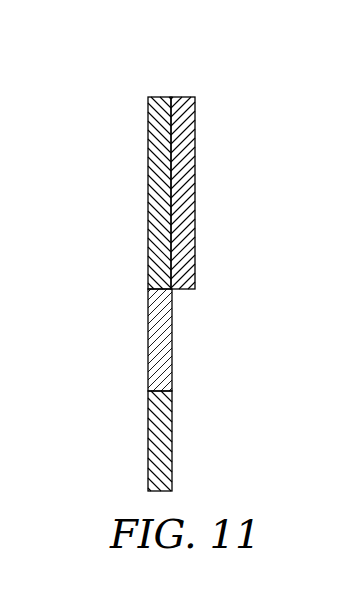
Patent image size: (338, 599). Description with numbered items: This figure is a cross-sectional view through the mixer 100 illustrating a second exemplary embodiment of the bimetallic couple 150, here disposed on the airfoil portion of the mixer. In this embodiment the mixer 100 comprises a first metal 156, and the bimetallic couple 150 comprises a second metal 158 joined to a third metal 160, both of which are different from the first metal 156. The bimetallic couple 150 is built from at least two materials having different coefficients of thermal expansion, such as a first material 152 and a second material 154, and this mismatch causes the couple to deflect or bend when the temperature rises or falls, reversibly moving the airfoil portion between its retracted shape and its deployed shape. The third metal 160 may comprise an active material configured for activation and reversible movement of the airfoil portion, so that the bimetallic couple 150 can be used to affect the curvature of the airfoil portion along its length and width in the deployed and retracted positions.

The mixer 100 is at (215, 254).
The bimetallic couple 150 is at (215, 171).
The first material 152 is at (204, 437).
The second material 154 is at (197, 172).
The first metal 156 is at (183, 232).
The second metal 158 is at (160, 478).
The third metal 160 is at (173, 334).